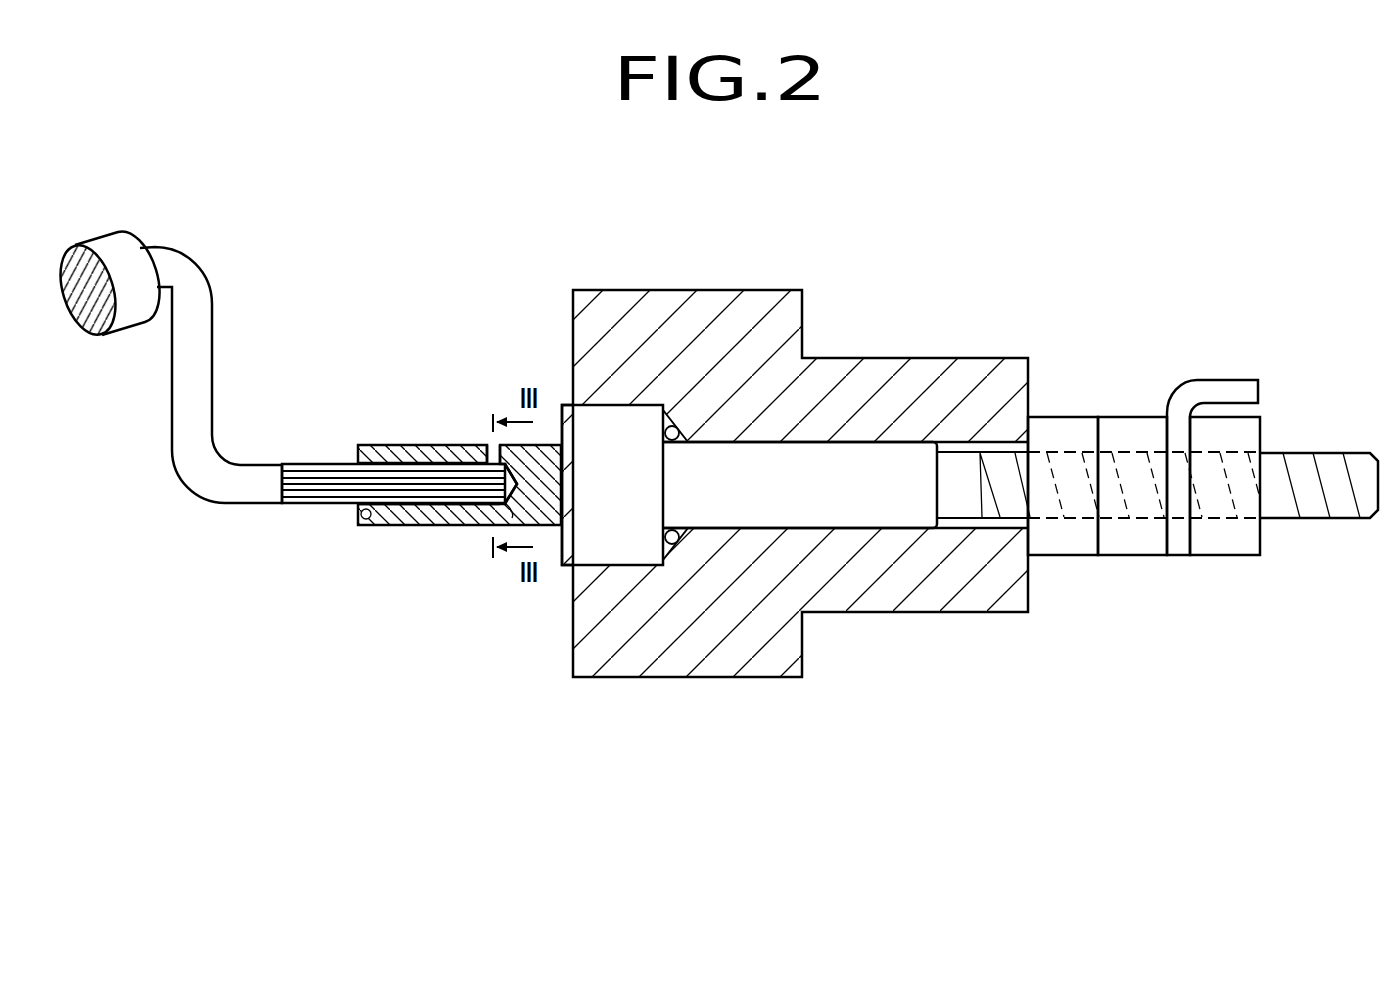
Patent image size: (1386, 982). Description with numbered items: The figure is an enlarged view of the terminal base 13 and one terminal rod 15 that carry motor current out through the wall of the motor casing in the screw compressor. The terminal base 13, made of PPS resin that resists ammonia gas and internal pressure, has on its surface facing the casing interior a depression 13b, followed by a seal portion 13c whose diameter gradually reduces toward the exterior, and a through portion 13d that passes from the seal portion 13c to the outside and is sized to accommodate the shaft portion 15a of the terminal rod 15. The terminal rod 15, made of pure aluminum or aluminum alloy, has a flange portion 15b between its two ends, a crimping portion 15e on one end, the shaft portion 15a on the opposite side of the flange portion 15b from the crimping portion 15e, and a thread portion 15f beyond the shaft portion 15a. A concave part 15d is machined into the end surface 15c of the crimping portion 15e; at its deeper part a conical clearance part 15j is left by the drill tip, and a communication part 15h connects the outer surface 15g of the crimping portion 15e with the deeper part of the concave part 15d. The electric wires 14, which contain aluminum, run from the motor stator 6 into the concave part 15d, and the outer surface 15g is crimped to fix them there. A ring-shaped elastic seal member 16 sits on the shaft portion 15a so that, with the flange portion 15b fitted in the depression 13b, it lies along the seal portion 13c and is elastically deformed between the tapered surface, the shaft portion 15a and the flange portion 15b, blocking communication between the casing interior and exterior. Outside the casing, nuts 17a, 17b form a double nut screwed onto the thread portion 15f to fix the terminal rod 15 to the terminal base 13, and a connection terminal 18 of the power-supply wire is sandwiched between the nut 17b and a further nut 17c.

The motor stator 6 is at (108, 243).
The electric wires 14 is at (197, 283).
The terminal rod 15 is at (824, 430).
The shaft portion 15a is at (845, 468).
The flange portion 15b is at (627, 423).
The end surface 15c is at (358, 446).
The concave part 15d is at (359, 525).
The crimping portion 15e is at (400, 517).
The thread portion 15f is at (1328, 500).
The outer surface 15g is at (423, 527).
The communication part 15h is at (488, 446).
The conical clearance part 15j is at (512, 503).
The seal member 16 is at (675, 420).
The terminal base 13 is at (766, 502).
The depression 13b is at (590, 572).
The seal portion 13c is at (686, 552).
The through portion 13d is at (970, 530).
The nut 17a is at (1060, 430).
The nut 17b is at (1134, 430).
The nut 17c is at (1232, 542).
The connection terminal 18 is at (1226, 388).